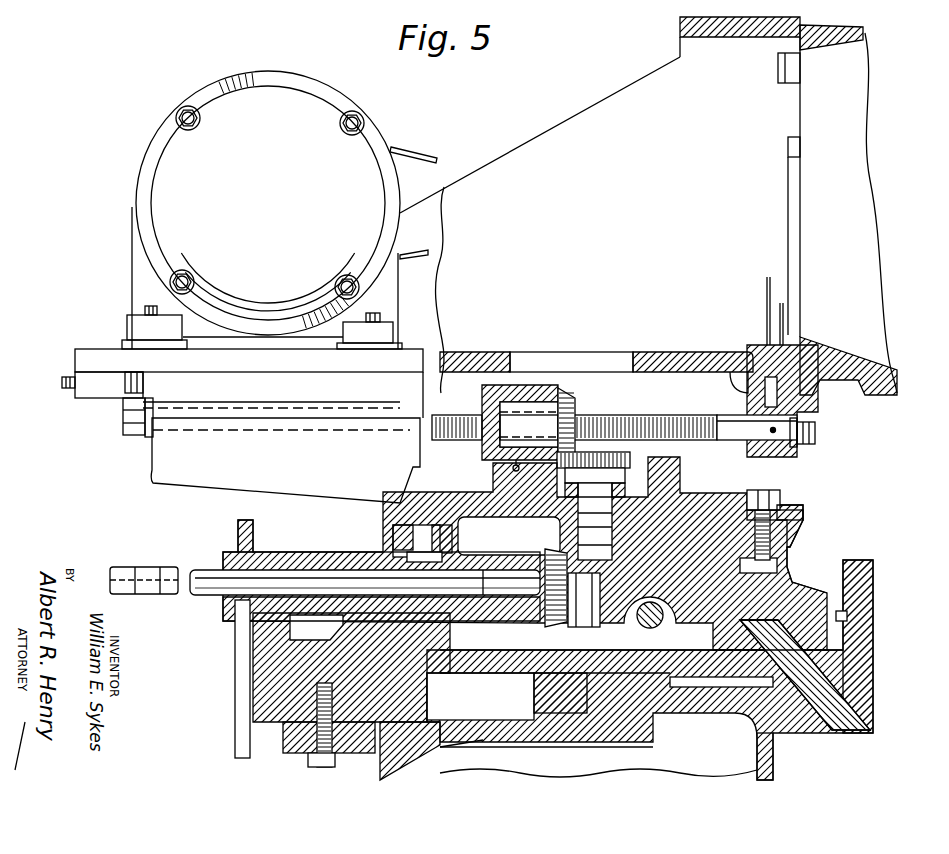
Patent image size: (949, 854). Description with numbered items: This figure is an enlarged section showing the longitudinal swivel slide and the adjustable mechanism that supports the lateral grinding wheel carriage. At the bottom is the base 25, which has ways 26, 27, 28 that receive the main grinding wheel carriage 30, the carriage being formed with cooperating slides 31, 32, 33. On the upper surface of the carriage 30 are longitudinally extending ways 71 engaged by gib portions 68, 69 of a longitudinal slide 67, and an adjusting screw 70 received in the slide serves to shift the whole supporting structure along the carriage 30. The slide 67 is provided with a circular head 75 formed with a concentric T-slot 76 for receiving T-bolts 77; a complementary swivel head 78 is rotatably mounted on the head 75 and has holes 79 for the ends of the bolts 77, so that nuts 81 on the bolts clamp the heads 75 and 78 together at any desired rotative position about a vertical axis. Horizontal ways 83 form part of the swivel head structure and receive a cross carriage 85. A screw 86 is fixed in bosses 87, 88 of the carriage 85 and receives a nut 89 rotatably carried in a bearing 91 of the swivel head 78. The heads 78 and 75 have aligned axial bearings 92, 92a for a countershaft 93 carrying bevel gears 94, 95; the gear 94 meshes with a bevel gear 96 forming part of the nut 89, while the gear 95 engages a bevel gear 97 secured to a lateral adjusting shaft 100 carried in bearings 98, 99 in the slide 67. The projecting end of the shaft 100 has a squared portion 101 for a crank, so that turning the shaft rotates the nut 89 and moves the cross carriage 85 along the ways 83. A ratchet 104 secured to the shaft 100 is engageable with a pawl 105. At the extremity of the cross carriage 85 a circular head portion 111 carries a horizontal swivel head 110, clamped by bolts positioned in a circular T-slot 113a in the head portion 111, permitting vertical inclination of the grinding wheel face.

The base 25 is at (751, 771).
The way 26 is at (335, 660).
The way 27 is at (612, 745).
The way 28 is at (807, 692).
The main grinding wheel carriage 30 is at (847, 618).
The slide 31 is at (410, 613).
The slide 32 is at (583, 700).
The slide 33 is at (837, 680).
The longitudinal slide 67 is at (807, 593).
The gib portion 68 is at (383, 620).
The gib portion 69 is at (777, 637).
The adjusting screw 70 is at (662, 622).
The ways 71 is at (830, 653).
The circular head 75 is at (807, 555).
The T-slot 76 is at (780, 565).
The T-bolt 77 is at (803, 510).
The swivel head 78 is at (802, 517).
The hole 79 is at (780, 513).
The nut 81 is at (782, 497).
The horizontal ways 83 is at (175, 437).
The cross carriage 85 is at (474, 400).
The screw 86 is at (708, 418).
The boss 87 is at (132, 410).
The boss 88 is at (812, 448).
The nut 89 is at (528, 392).
The bearing 91 is at (520, 408).
The axial bearing 92 is at (613, 505).
The axial bearing 92a is at (605, 582).
The countershaft 93 is at (627, 497).
The bevel gear 94 is at (618, 455).
The bevel gear 95 is at (572, 560).
The bevel gear 96 is at (568, 398).
The bevel gear 97 is at (548, 556).
The bearing 98 is at (293, 557).
The bearing 99 is at (490, 625).
The lateral adjusting shaft 100 is at (290, 552).
The squared portion 101 is at (138, 538).
The ratchet 104 is at (237, 523).
The pawl 105 is at (237, 705).
The horizontal swivel head 110 is at (815, 187).
The circular head portion 111 is at (733, 385).
The circular T-slot 113a is at (817, 397).